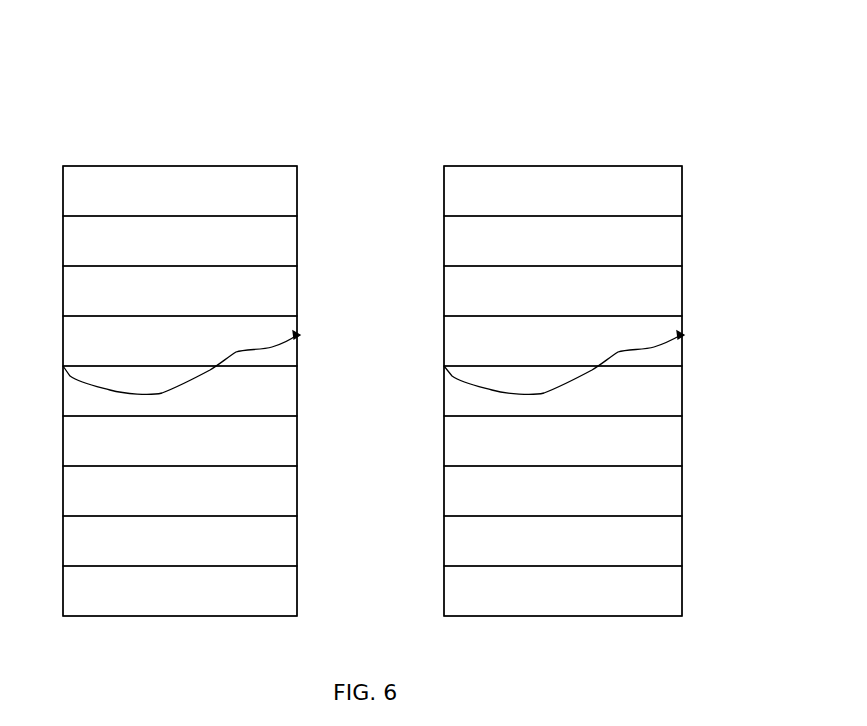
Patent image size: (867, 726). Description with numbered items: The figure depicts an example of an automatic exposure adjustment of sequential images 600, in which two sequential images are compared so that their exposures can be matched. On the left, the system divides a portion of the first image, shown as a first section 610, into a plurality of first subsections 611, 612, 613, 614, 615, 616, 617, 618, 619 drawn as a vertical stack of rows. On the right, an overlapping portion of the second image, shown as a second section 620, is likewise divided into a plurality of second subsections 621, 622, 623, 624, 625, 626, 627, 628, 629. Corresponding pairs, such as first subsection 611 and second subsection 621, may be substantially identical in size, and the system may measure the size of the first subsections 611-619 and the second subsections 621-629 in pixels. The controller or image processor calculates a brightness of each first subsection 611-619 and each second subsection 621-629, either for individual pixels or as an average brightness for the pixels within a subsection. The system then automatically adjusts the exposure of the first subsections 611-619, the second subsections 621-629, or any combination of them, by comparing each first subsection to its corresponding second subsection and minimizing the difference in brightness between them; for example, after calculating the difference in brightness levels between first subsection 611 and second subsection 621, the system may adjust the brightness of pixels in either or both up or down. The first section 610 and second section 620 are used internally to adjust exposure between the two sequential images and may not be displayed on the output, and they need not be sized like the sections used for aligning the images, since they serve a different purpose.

The automatic exposure adjustment of sequential images 600 is at (399, 92).
The first section 610 is at (165, 138).
The first subsection 611 is at (263, 200).
The first subsection 612 is at (280, 250).
The first subsection 613 is at (280, 300).
The first subsection 614 is at (280, 350).
The first subsection 615 is at (280, 400).
The first subsection 616 is at (280, 450).
The first subsection 617 is at (280, 500).
The first subsection 618 is at (280, 550).
The first subsection 619 is at (280, 600).
The second section 620 is at (549, 125).
The second subsection 621 is at (648, 200).
The second subsection 622 is at (665, 250).
The second subsection 623 is at (665, 300).
The second subsection 624 is at (665, 350).
The second subsection 625 is at (665, 400).
The second subsection 626 is at (665, 450).
The second subsection 627 is at (665, 500).
The second subsection 628 is at (665, 550).
The second subsection 629 is at (665, 600).